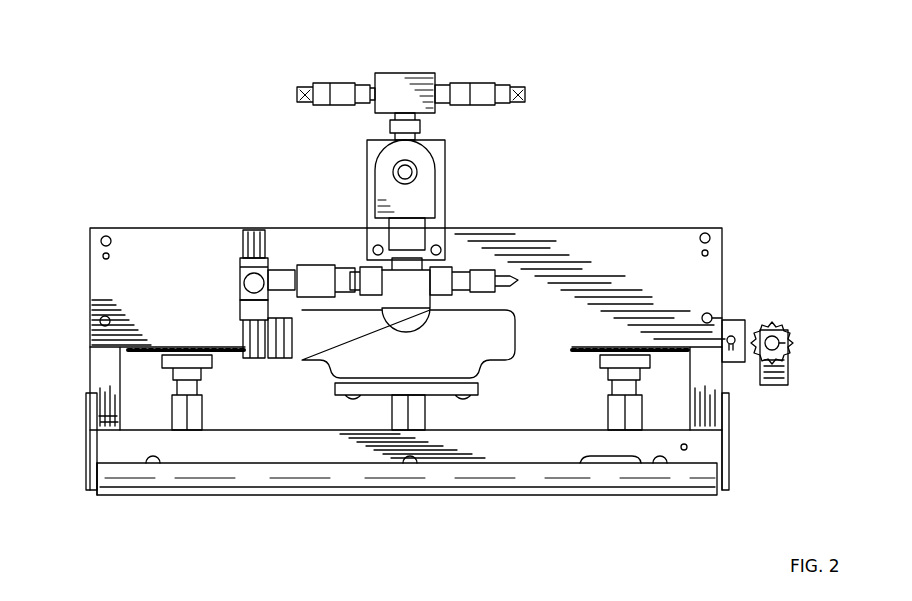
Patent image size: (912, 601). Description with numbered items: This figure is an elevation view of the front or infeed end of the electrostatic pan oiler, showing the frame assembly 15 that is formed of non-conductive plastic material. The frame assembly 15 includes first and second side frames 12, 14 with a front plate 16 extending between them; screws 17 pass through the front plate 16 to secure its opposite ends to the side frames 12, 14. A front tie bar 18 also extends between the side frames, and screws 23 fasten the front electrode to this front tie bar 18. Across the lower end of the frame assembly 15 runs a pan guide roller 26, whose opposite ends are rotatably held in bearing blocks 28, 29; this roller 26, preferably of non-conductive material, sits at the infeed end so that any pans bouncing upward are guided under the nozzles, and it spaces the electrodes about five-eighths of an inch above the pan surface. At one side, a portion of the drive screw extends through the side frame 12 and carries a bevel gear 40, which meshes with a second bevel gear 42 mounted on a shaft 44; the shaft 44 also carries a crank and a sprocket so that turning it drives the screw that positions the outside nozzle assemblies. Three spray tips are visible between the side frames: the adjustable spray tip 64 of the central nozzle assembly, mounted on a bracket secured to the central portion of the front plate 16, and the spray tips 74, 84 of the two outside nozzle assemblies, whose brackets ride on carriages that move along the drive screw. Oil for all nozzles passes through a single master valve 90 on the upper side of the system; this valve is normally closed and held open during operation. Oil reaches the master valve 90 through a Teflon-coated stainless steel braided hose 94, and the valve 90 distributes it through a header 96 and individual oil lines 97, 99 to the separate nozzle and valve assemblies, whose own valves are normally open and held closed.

The first side frame 12 is at (707, 453).
The second side frame 14 is at (108, 364).
The frame assembly 15 is at (86, 236).
The front plate 16 is at (618, 233).
The screws 17 is at (110, 236).
The front tie bar 18 is at (280, 470).
The screws 23 is at (152, 467).
The pan guide roller 26 is at (190, 485).
The bearing block 28 is at (86, 450).
The bearing block 29 is at (729, 468).
The bevel gear 40 is at (760, 322).
The second bevel gear 42 is at (790, 343).
The shaft 44 is at (790, 350).
The adjustable spray tip 64 is at (418, 408).
The spray tip 74 is at (630, 412).
The spray tip 84 is at (205, 414).
The master valve 90 is at (416, 172).
The stainless steel braided hose 94 is at (516, 284).
The header 96 is at (396, 85).
The oil line 97 is at (512, 90).
The oil line 99 is at (299, 92).